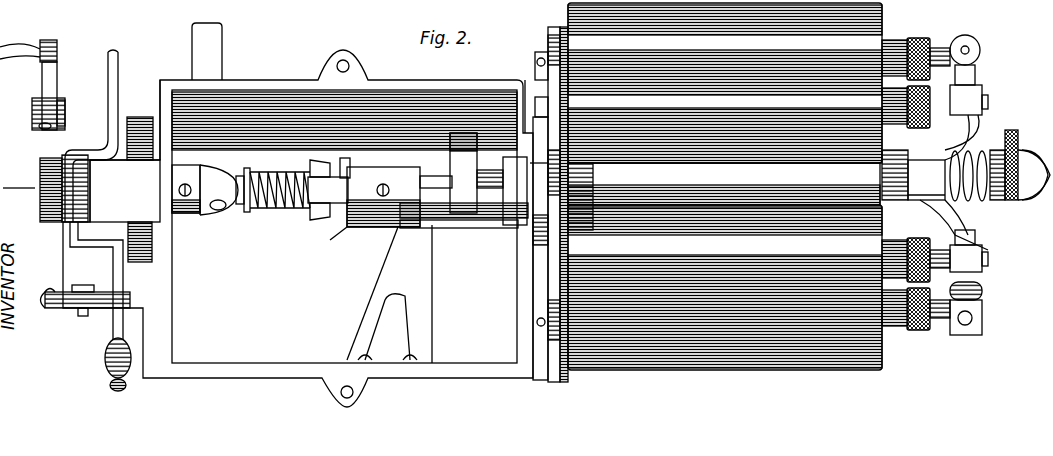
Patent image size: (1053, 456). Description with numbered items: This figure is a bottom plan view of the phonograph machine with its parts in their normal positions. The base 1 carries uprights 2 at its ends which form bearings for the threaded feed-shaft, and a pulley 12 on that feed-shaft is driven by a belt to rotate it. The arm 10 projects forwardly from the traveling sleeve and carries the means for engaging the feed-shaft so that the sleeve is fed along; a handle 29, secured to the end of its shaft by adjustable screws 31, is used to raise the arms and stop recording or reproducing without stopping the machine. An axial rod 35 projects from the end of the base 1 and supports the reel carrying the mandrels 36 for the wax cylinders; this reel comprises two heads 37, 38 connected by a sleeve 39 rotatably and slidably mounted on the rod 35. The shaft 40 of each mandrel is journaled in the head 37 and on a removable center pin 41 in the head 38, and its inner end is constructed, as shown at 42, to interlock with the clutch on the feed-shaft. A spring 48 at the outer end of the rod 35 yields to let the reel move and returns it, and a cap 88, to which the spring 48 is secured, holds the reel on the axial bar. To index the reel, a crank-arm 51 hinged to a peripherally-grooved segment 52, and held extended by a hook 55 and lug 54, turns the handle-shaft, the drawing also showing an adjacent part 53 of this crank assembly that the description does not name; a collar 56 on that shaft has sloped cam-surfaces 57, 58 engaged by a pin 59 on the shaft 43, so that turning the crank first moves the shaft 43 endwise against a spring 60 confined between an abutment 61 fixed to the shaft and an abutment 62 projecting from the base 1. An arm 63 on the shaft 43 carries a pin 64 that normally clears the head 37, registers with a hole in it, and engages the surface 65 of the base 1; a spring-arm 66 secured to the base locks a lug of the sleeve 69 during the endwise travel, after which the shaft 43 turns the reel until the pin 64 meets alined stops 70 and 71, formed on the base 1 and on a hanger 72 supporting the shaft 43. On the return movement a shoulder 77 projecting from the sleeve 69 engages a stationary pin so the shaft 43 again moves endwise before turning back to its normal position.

The base 1 is at (262, 82).
The uprights 2 is at (125, 169).
The arm 10 is at (222, 47).
The pulley 12 is at (142, 262).
The operating lever or handle 29 is at (113, 274).
The adjustable screws 31 is at (115, 390).
The axial rod 35 is at (1030, 172).
The mandrels 36 is at (755, 380).
The reel-head 37 is at (545, 168).
The reel-head 38 is at (913, 175).
The sleeve 39 is at (724, 196).
The mandrel-shaft 40 is at (895, 40).
The center pin 41 is at (983, 58).
The interlocking end of mandrel-shaft 42 is at (540, 60).
The shaft 43 is at (436, 176).
The spring 48 is at (940, 200).
The crank-arm 51 is at (57, 45).
The peripherally-grooved segment 52 is at (47, 292).
The collar 53 is at (32, 118).
The lug 54 is at (65, 106).
The hook 55 is at (68, 146).
The collar 56 is at (190, 170).
The cam-surface 57 is at (242, 174).
The cam-surface 58 is at (225, 208).
The pin 59 is at (215, 212).
The spring 60 is at (290, 210).
The abutment 61 is at (250, 170).
The abutment 62 is at (320, 220).
The arm 63 is at (395, 170).
The pin 64 is at (468, 218).
The surface 65 is at (520, 228).
The spring-arm 66 is at (433, 279).
The sleeve 69 is at (370, 212).
The projection 70 is at (455, 133).
The projection 71 is at (516, 191).
The hanger 72 is at (476, 173).
The shoulder 77 is at (350, 166).
The cap 88 is at (1015, 130).